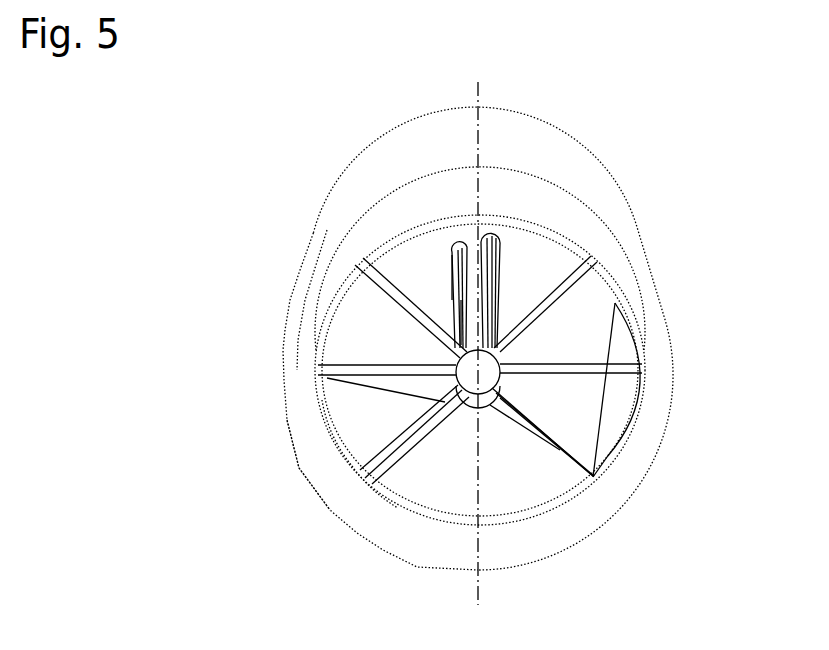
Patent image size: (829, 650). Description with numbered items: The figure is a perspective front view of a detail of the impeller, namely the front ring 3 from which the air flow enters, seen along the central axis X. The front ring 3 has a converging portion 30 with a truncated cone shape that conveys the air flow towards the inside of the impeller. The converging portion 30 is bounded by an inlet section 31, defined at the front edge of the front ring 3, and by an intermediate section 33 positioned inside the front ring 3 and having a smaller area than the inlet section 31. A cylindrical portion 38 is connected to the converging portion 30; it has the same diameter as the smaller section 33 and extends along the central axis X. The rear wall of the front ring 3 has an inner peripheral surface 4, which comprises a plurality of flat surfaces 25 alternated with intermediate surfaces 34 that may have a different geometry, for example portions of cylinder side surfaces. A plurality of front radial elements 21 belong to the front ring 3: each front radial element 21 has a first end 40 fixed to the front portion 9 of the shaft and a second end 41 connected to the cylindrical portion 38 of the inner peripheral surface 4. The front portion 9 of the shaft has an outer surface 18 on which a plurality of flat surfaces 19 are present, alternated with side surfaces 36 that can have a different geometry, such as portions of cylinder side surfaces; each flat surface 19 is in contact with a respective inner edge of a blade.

The front ring 3 is at (667, 252).
The inner peripheral surface 4 is at (617, 417).
The front portion of the shaft 9 is at (511, 321).
The outer surface 18 is at (503, 290).
The flat surfaces 19 is at (452, 278).
The front radial elements 21 is at (617, 368).
The flat surfaces 25 is at (458, 428).
The converging portion 30 is at (562, 526).
The inlet section 31 is at (328, 508).
The intermediate section 33 is at (355, 468).
The intermediate surfaces 34 is at (313, 396).
The side surfaces 36 is at (462, 322).
The cylindrical portion 38 is at (398, 508).
The first end 40 is at (482, 404).
The second end 41 is at (577, 470).
The central axis X is at (474, 598).